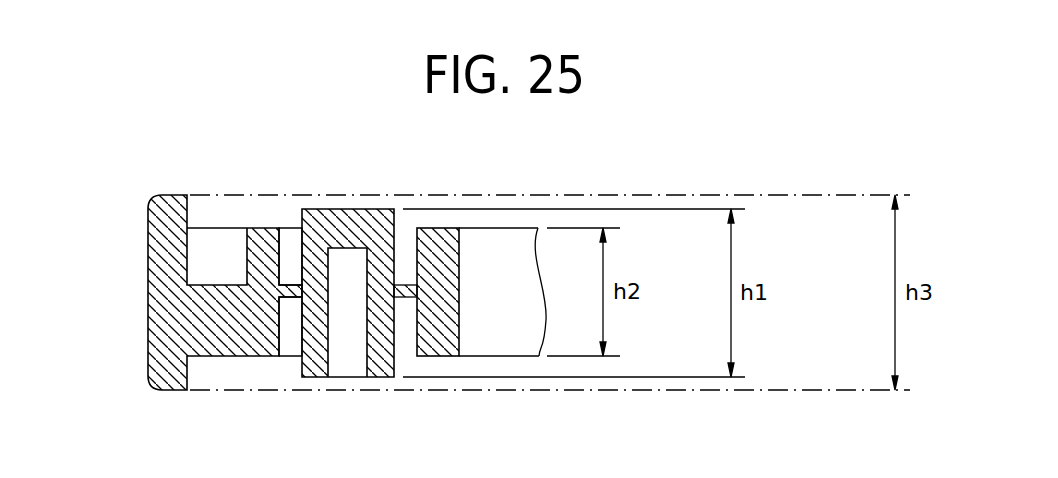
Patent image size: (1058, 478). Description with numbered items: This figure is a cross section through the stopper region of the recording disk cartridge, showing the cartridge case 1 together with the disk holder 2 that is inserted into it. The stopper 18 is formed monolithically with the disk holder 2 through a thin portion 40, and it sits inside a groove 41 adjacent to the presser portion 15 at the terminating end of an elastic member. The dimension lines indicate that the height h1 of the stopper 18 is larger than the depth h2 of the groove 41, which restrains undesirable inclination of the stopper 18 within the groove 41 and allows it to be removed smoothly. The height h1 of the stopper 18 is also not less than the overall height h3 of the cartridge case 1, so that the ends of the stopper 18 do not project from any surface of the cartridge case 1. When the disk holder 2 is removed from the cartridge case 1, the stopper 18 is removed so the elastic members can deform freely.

The cartridge case 1 is at (221, 206).
The disk holder 2 is at (437, 344).
The presser portion 15 is at (160, 310).
The stopper 18 is at (368, 216).
The thin portion 40 is at (290, 241).
The groove 41 is at (293, 345).